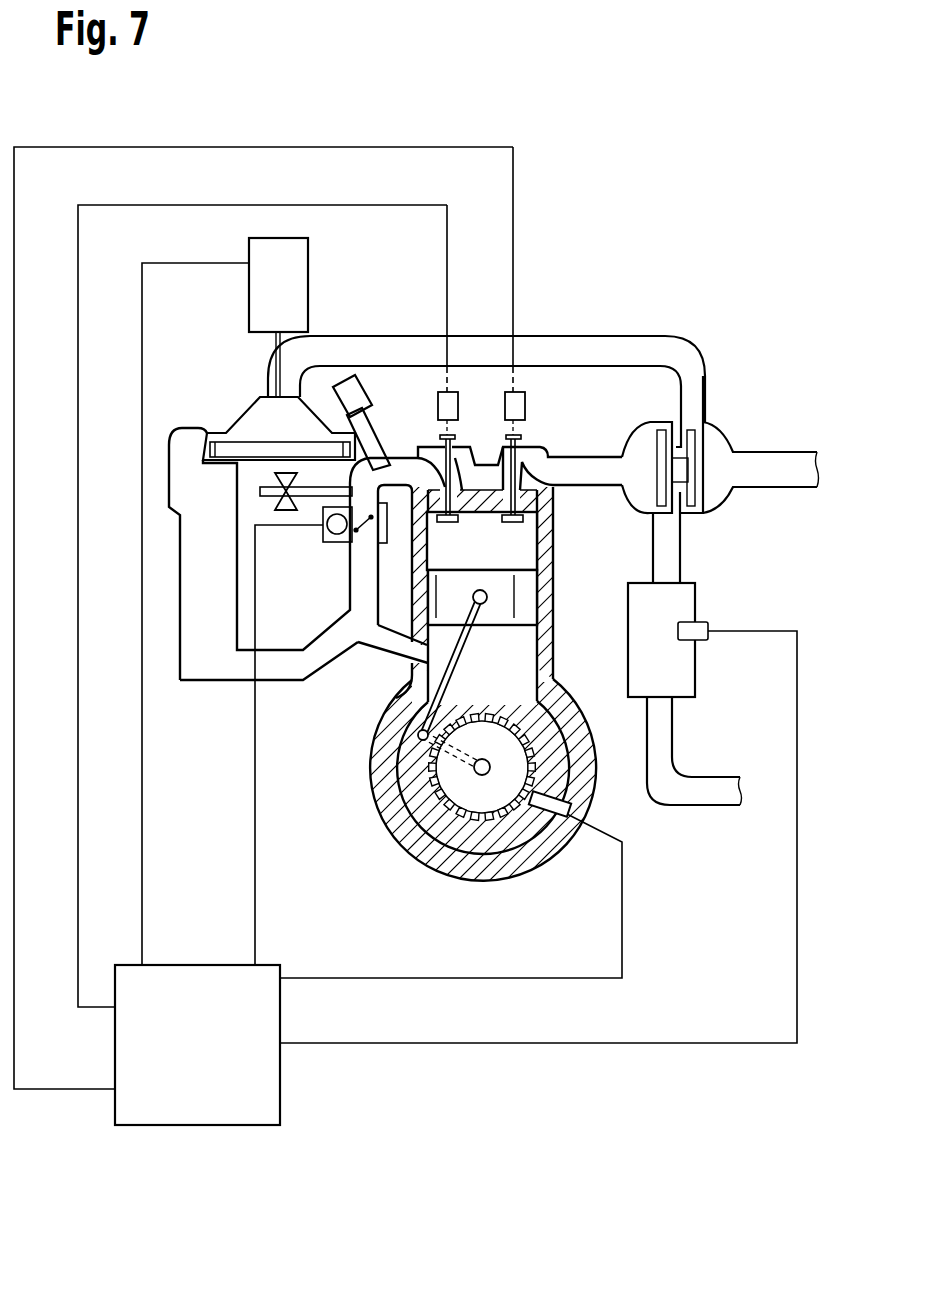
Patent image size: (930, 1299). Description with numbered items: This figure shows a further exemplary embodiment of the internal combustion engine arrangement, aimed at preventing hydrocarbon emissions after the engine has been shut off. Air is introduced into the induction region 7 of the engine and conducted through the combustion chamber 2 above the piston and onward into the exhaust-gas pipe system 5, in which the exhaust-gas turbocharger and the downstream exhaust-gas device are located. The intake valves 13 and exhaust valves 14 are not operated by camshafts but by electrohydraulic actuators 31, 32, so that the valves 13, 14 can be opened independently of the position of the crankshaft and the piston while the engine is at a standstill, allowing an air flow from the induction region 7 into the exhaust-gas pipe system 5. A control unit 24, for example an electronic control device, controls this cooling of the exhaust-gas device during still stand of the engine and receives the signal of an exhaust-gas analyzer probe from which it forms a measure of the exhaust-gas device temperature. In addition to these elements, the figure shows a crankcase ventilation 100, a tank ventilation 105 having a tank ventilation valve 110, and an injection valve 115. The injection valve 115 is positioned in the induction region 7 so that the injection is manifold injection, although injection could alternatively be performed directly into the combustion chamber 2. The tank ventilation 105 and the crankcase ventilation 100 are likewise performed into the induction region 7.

The combustion chamber 2 is at (523, 540).
The exhaust-gas pipe system 5 is at (690, 546).
The induction region 7 is at (225, 681).
The intake valves 13 is at (440, 482).
The exhaust valves 14 is at (522, 483).
The control unit 24 is at (205, 1126).
The electrohydraulic actuator 31 is at (438, 408).
The electrohydraulic actuator 32 is at (525, 408).
The crankcase ventilation 100 is at (385, 648).
The tank ventilation 105 is at (265, 487).
The tank ventilation valve 110 is at (287, 512).
The injection valve 115 is at (350, 385).